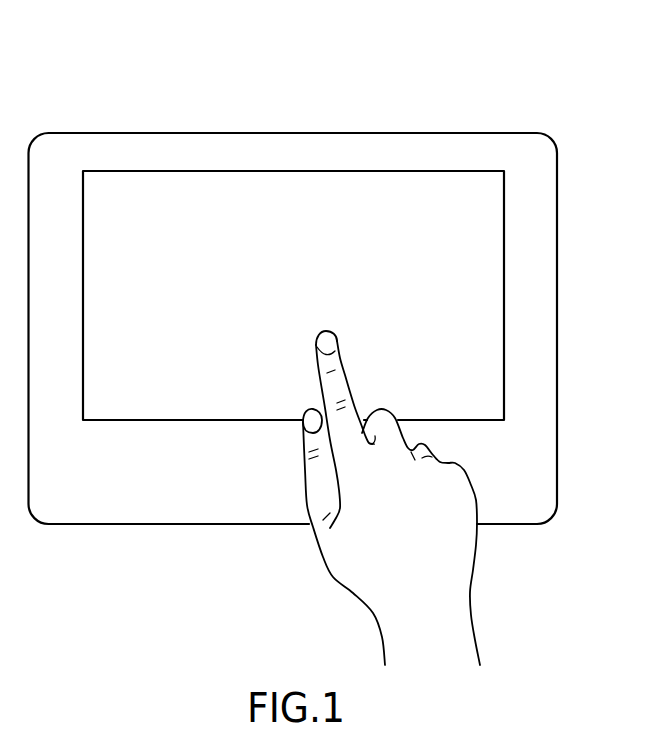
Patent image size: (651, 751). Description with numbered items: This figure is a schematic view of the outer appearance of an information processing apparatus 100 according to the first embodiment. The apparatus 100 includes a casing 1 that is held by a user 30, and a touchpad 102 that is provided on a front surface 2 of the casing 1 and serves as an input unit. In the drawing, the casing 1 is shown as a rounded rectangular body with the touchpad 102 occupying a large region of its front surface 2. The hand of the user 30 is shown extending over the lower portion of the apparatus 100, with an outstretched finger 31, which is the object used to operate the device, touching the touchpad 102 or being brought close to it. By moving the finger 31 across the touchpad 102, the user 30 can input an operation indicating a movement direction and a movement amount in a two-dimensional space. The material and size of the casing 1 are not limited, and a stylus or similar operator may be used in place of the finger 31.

The information processing apparatus 100 is at (308, 80).
The casing 1 is at (482, 132).
The front surface 2 is at (536, 242).
The touchpad 102 is at (475, 348).
The user 30 is at (463, 627).
The finger 31 is at (333, 387).